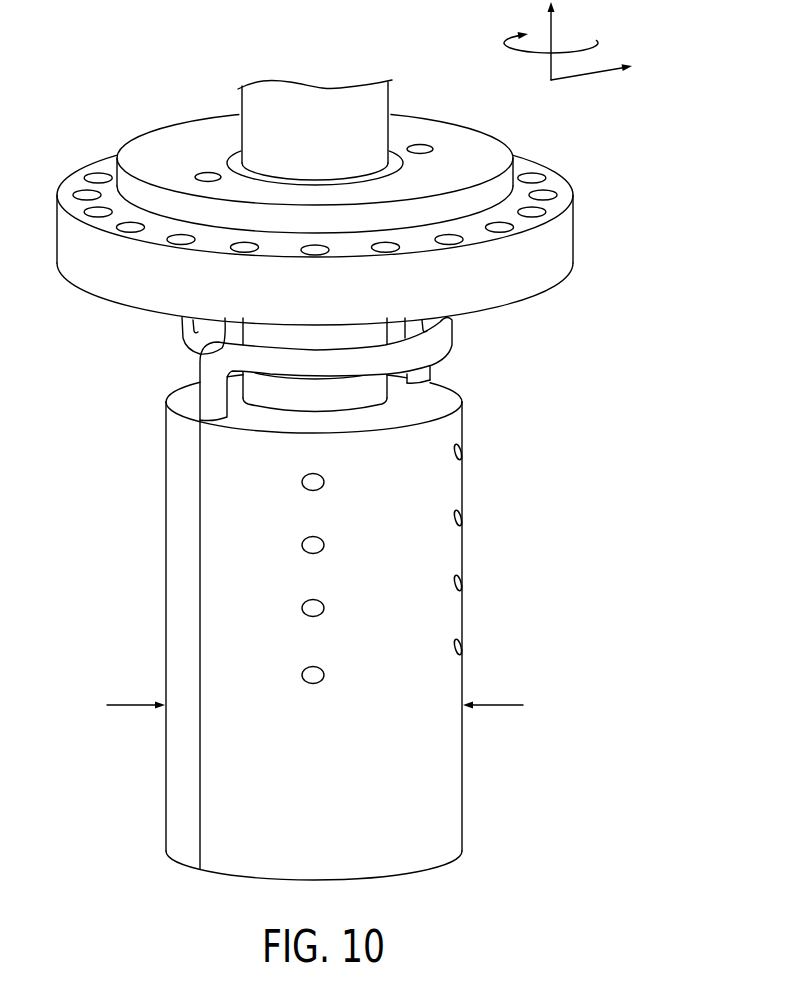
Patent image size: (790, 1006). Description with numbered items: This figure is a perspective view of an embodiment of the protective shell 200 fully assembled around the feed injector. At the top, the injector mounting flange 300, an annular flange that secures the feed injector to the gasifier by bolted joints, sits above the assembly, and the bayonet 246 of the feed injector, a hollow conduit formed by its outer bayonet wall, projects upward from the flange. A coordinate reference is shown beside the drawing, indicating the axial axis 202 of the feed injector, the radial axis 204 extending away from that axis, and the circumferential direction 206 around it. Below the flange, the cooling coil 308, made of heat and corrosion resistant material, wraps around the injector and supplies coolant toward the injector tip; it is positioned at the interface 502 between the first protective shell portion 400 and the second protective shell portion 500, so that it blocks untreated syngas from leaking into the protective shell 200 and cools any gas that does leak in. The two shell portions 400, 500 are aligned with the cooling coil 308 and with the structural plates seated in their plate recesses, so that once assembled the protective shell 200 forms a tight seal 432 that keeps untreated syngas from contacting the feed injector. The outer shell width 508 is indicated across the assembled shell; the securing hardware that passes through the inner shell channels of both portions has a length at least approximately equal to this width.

The protective shell 200 is at (78, 611).
The axial axis 202 is at (553, 34).
The radial axis 204 is at (587, 77).
The circumferential direction 206 is at (530, 52).
The bayonet 246 is at (307, 66).
The injector mounting flange 300 is at (152, 136).
The cooling coil 308 is at (178, 387).
The first protective shell portion 400 is at (165, 477).
The tight seal 432 is at (216, 597).
The second protective shell portion 500 is at (463, 390).
The interface 502 is at (197, 885).
The outer shell width 508 is at (499, 705).